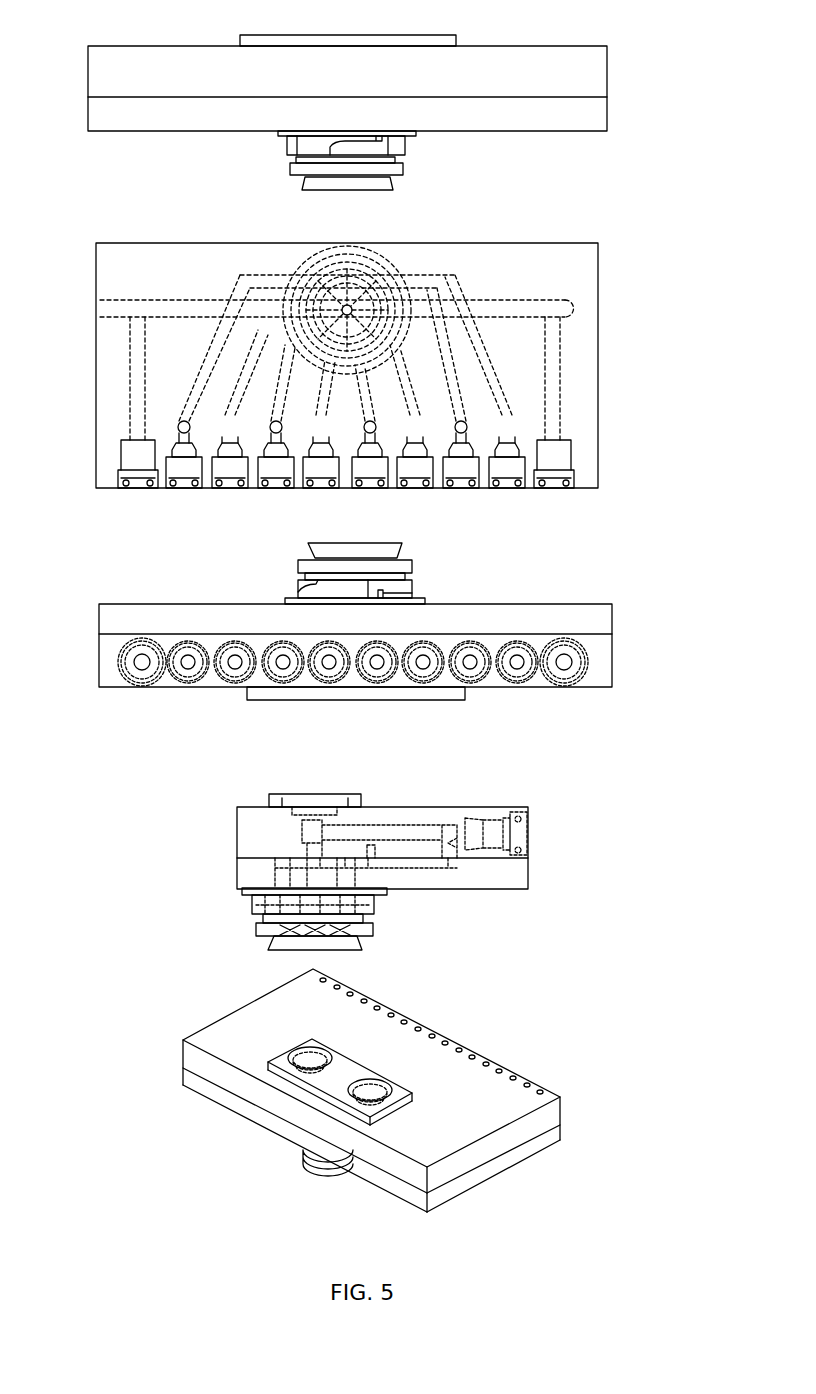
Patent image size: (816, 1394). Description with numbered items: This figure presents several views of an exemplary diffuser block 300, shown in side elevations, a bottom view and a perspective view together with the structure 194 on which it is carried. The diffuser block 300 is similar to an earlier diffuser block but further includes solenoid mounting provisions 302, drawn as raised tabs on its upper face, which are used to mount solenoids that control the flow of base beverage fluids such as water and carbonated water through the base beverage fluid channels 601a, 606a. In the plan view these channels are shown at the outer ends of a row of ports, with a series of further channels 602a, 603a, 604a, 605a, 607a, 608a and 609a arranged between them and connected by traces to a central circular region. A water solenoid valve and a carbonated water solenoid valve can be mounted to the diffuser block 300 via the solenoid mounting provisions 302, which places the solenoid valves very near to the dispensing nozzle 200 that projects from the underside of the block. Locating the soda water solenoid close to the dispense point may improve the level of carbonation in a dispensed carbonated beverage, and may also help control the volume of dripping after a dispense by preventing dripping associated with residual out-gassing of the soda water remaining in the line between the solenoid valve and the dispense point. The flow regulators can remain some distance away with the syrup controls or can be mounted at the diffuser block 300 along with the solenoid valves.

The drive subassembly / electronics module 194 is at (520, 870).
The dispensing nozzle 200 is at (405, 170).
The diffuser block 300 is at (598, 73).
The solenoid mounting provisions 302 is at (238, 43).
The base beverage fluid channel 601a is at (128, 492).
The terminal 602a is at (220, 396).
The terminal 603a is at (260, 438).
The terminal 604a is at (320, 396).
The terminal 605a is at (363, 438).
The base beverage fluid channel 606a is at (551, 492).
The terminal 607a is at (450, 438).
The terminal 608a is at (475, 396).
The terminal 609a is at (540, 438).